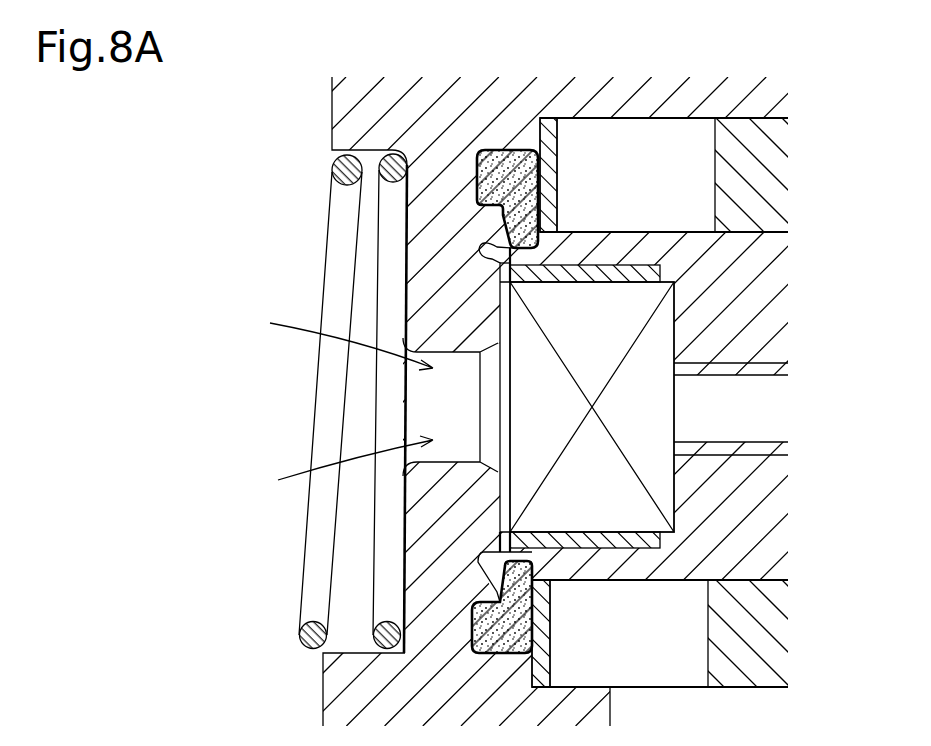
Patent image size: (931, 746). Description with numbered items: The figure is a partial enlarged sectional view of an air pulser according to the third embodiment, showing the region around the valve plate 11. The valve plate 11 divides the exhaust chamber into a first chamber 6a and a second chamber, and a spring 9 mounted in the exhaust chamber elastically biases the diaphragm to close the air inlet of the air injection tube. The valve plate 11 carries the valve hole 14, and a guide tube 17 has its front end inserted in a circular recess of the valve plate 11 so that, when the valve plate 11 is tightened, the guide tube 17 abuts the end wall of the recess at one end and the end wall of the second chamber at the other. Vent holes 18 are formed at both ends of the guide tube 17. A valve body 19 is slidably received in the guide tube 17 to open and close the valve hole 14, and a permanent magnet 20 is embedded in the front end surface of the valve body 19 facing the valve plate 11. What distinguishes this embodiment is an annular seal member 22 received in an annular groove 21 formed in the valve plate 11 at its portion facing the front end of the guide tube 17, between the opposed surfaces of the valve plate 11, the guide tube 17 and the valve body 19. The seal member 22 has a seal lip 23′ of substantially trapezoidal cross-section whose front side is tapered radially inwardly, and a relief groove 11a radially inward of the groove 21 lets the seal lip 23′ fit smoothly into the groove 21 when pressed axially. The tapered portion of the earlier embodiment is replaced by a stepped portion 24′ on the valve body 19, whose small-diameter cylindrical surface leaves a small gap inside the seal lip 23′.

The valve plate 11 is at (333, 107).
The valve hole 14 is at (418, 403).
The spring 9 is at (318, 523).
The first chamber 6a is at (248, 622).
The valve body 19 is at (766, 297).
The vent holes 18 is at (668, 140).
The guide tube 17 is at (765, 118).
The stepped portion 24′ is at (538, 257).
The annular groove 21 is at (490, 150).
The annular seal member 22 is at (523, 150).
The seal lip 23′ is at (500, 215).
The relief groove 11a is at (508, 266).
The permanent magnet 20 is at (520, 488).